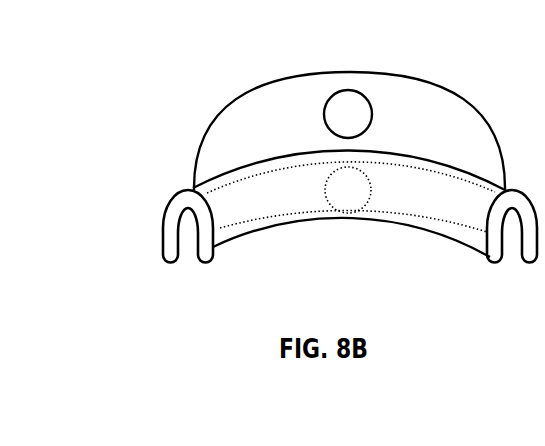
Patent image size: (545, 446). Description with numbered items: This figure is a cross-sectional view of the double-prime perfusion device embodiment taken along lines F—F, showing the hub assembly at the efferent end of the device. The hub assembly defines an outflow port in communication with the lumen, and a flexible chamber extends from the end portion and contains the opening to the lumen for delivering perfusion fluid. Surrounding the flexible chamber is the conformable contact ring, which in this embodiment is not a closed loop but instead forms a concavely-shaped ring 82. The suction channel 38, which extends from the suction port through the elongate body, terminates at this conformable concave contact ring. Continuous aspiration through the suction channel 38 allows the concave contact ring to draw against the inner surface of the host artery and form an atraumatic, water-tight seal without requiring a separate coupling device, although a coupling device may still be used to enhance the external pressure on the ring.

The suction channel 38 is at (348, 197).
The concavely-shaped ring 82 is at (183, 238).